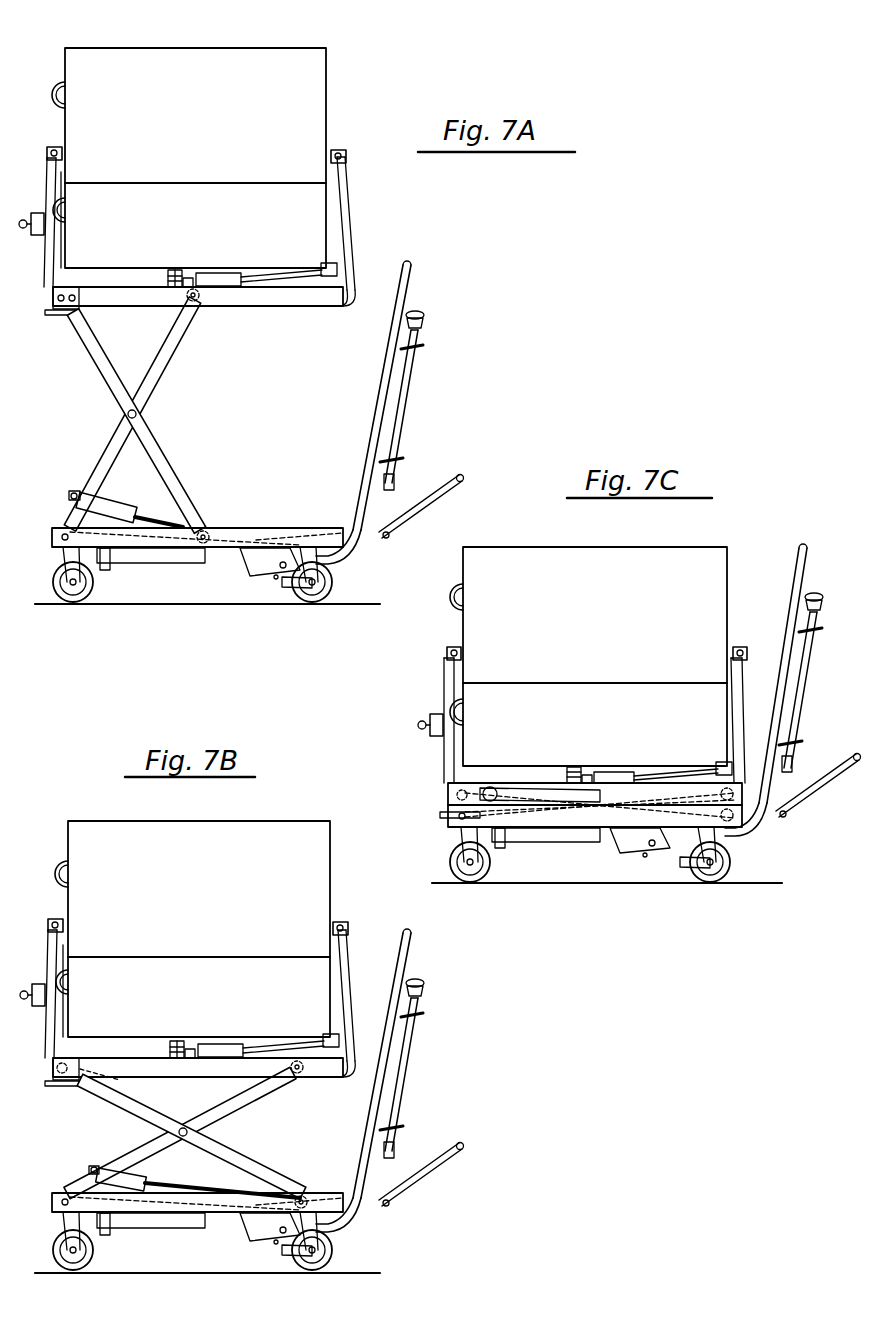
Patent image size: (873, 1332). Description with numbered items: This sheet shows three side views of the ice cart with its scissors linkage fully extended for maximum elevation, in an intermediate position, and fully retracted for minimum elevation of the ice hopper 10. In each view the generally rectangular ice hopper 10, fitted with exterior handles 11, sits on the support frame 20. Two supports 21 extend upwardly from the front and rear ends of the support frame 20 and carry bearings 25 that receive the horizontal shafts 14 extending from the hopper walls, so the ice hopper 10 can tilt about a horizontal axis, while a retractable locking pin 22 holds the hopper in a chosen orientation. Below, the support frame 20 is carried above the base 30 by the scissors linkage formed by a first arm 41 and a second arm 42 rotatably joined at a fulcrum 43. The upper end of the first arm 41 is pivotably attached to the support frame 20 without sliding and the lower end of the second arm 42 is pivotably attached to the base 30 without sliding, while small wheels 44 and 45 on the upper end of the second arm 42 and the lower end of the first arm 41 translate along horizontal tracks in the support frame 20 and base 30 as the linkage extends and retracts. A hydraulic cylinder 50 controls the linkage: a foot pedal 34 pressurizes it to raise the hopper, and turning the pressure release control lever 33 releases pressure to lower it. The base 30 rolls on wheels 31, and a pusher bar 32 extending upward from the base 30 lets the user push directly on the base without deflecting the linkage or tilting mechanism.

In FIG. 7A, the ice hopper 10 is at (212, 140).
In FIG. 7B, the ice hopper 10 is at (212, 911).
In FIG. 7C, the ice hopper 10 is at (609, 645).
In FIG. 7A, the handles 11 is at (57, 90).
In FIG. 7B, the handles 11 is at (58, 865).
In FIG. 7C, the handles 11 is at (466, 598).
In FIG. 7A, the horizontal shafts 14 is at (62, 158).
In FIG. 7B, the horizontal shafts 14 is at (63, 929).
In FIG. 7C, the horizontal shafts 14 is at (447, 657).
In FIG. 7A, the support frame 20 is at (311, 304).
In FIG. 7B, the support frame 20 is at (316, 1078).
In FIG. 7C, the support frame 20 is at (449, 794).
In FIG. 7A, the supports 21 is at (348, 246).
In FIG. 7B, the supports 21 is at (348, 1002).
In FIG. 7C, the supports 21 is at (448, 753).
In FIG. 7A, the retractable locking pin 22 is at (37, 212).
In FIG. 7B, the retractable locking pin 22 is at (46, 1000).
In FIG. 7C, the retractable locking pin 22 is at (428, 724).
In FIG. 7A, the bearings 25 is at (62, 150).
In FIG. 7B, the bearings 25 is at (55, 919).
In FIG. 7C, the bearings 25 is at (447, 650).
In FIG. 7A, the base 30 is at (256, 528).
In FIG. 7B, the base 30 is at (320, 1193).
In FIG. 7C, the base 30 is at (512, 818).
In FIG. 7A, the wheels 31 is at (332, 580).
In FIG. 7B, the wheels 31 is at (335, 1250).
In FIG. 7C, the wheels 31 is at (455, 860).
In FIG. 7A, the pusher bar 32 is at (413, 272).
In FIG. 7B, the pusher bar 32 is at (412, 963).
In FIG. 7C, the pusher bar 32 is at (810, 557).
In FIG. 7A, the pressure release control lever 33 is at (410, 396).
In FIG. 7B, the pressure release control lever 33 is at (408, 1070).
In FIG. 7C, the pressure release control lever 33 is at (806, 690).
In FIG. 7A, the foot pedal 34 is at (446, 486).
In FIG. 7B, the foot pedal 34 is at (446, 1160).
In FIG. 7C, the foot pedal 34 is at (826, 793).
In FIG. 7A, the first arm 41 is at (103, 372).
In FIG. 7B, the first arm 41 is at (118, 1100).
In FIG. 7A, the second arm 42 is at (170, 357).
In FIG. 7B, the second arm 42 is at (118, 1160).
In FIG. 7A, the fulcrum 43 is at (138, 415).
In FIG. 7B, the fulcrum 43 is at (183, 1132).
In FIG. 7A, the small wheel 44 is at (201, 296).
In FIG. 7B, the small wheel 44 is at (297, 1067).
In FIG. 7A, the small wheel 45 is at (207, 532).
In FIG. 7B, the small wheel 45 is at (301, 1202).
In FIG. 7A, the hydraulic cylinder 50 is at (150, 518).
In FIG. 7B, the hydraulic cylinder 50 is at (160, 1180).
In FIG. 7C, the hydraulic cylinder 50 is at (602, 822).